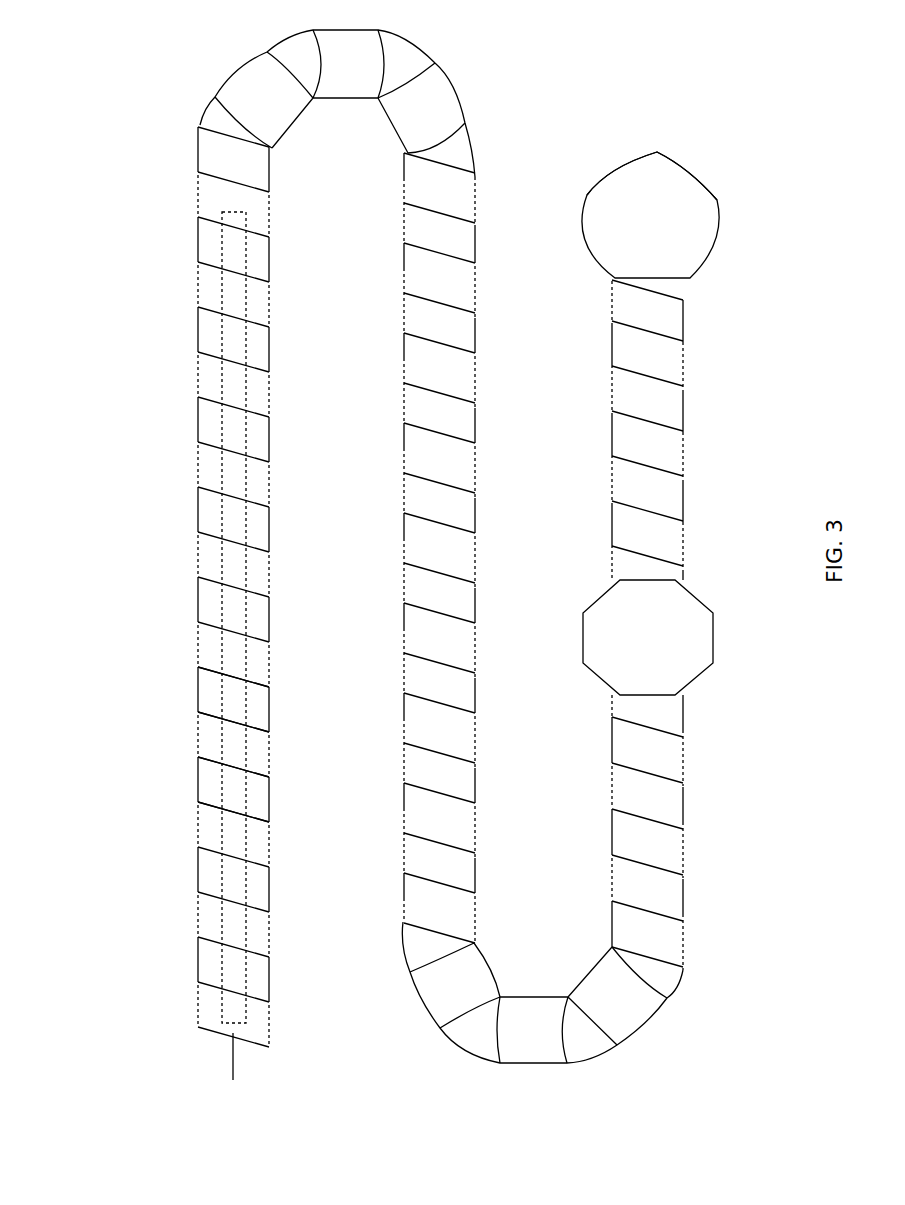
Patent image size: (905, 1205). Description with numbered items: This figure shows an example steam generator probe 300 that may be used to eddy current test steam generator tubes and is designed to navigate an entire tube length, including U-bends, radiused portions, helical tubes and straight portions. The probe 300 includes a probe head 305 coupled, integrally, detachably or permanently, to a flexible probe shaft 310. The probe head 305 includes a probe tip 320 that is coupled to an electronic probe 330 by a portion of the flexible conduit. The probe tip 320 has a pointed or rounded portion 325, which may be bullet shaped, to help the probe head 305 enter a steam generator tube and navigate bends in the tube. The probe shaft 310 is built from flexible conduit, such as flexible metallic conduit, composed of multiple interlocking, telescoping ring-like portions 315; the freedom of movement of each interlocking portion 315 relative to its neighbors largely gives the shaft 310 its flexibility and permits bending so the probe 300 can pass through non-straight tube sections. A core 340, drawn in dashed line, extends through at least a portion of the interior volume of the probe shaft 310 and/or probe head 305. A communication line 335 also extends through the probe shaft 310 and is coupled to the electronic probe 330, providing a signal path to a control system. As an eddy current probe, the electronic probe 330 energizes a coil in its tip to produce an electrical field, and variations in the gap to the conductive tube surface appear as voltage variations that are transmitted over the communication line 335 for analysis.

The steam generator probe 300 is at (55, 1029).
The probe head 305 is at (725, 153).
The flexible probe shaft 310 is at (185, 517).
The interlocking portion 315 is at (195, 690).
The probe tip 320 is at (577, 189).
The pointed portion 325 is at (657, 152).
The electronic probe 330 is at (583, 637).
The communication line 335 is at (233, 1060).
The core 340 is at (213, 1007).